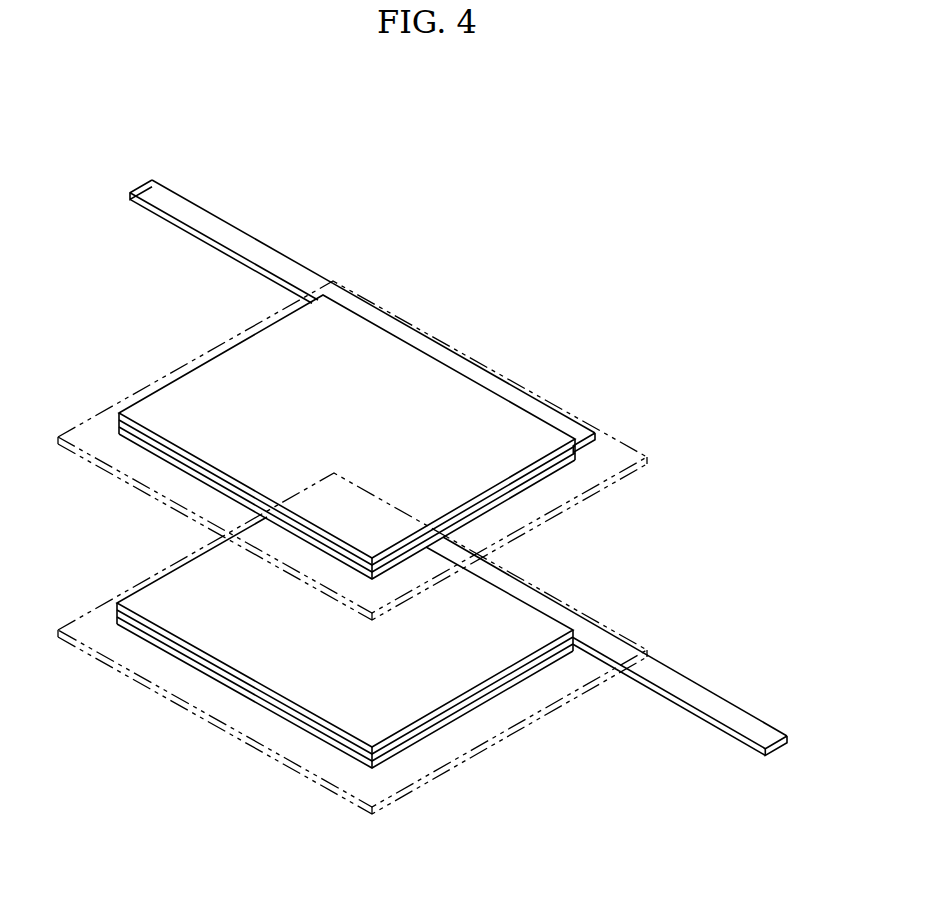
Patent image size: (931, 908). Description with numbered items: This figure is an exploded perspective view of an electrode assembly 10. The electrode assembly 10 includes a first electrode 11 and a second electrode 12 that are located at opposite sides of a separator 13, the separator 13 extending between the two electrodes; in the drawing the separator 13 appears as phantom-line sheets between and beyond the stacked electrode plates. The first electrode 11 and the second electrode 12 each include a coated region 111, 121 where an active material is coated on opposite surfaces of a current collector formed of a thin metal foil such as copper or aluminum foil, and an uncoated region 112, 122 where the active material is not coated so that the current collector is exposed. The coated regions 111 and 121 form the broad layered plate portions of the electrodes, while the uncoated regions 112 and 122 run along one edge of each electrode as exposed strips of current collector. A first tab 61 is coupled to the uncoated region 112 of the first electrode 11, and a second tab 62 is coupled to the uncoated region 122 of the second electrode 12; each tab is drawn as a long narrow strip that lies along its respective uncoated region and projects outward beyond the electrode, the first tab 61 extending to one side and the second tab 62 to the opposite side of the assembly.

The electrode assembly 10 is at (428, 155).
The first electrode 11 is at (406, 642).
The coated region 111 is at (540, 617).
The uncoated region 112 is at (597, 532).
The second electrode 12 is at (357, 398).
The coated region 121 is at (362, 343).
The uncoated region 122 is at (464, 363).
The separator 13 is at (151, 487).
The first tab 61 is at (675, 675).
The second tab 62 is at (253, 247).